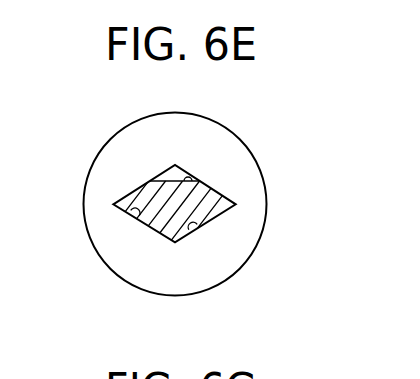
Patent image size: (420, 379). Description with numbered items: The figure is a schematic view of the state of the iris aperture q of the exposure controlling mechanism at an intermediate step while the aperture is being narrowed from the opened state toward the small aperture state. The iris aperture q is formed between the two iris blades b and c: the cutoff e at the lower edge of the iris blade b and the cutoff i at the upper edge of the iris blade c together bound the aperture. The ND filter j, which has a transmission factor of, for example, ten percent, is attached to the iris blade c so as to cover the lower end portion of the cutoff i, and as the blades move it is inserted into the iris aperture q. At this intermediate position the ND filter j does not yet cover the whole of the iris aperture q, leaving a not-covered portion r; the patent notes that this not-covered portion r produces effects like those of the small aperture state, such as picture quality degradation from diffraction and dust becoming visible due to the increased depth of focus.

The iris blade b is at (104, 180).
The iris blade c is at (246, 222).
The cutoff e is at (192, 176).
The cutoff i is at (198, 226).
The ND filter j is at (216, 186).
The iris aperture q is at (130, 211).
The not-covered portion r is at (163, 174).